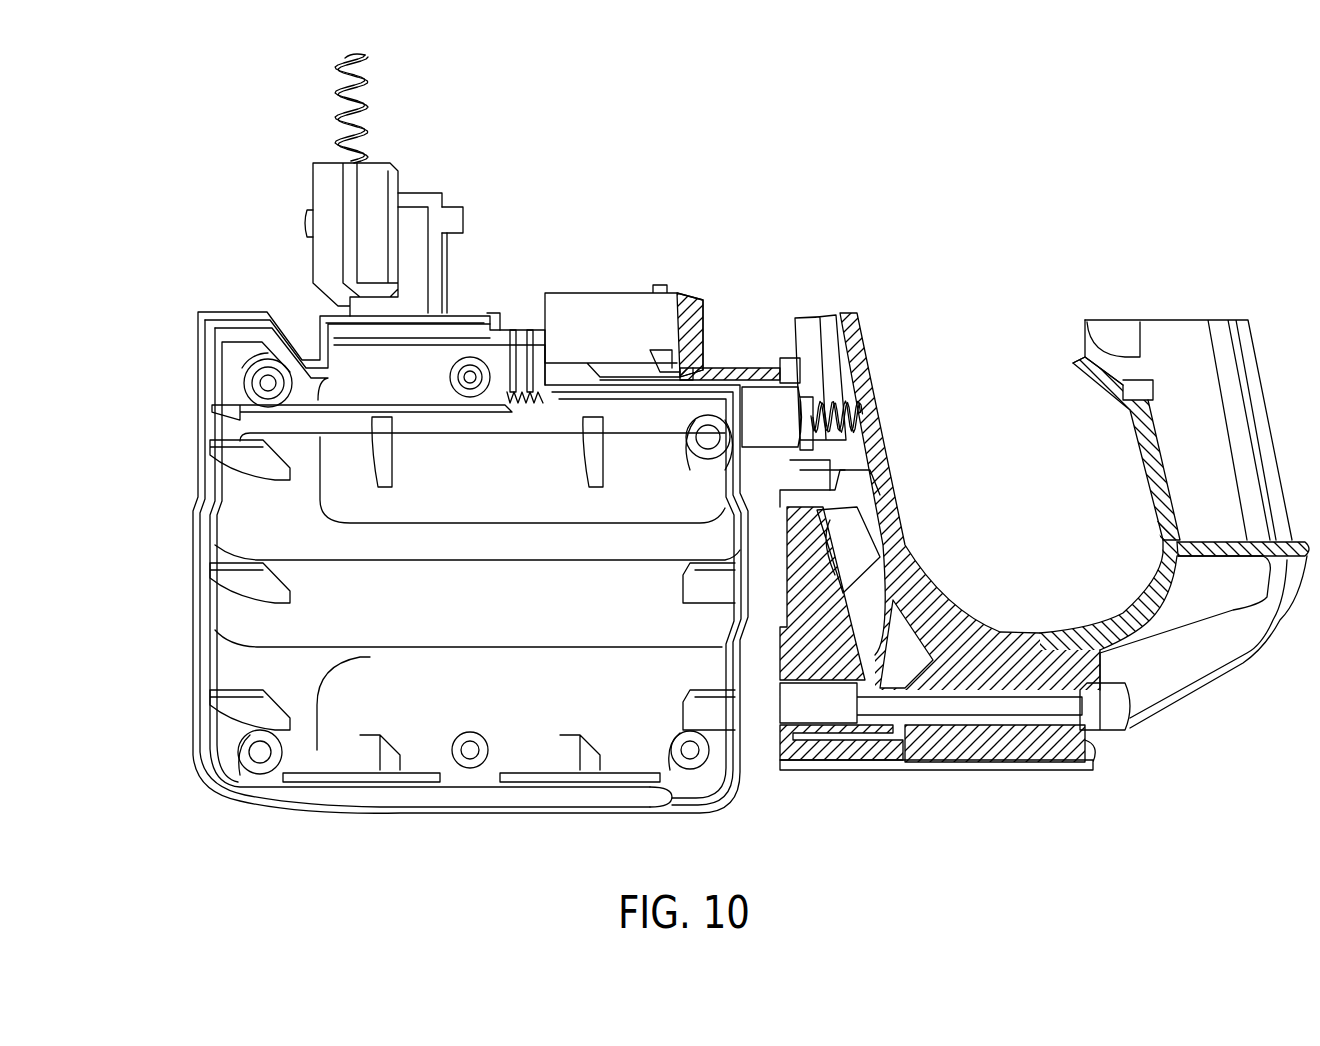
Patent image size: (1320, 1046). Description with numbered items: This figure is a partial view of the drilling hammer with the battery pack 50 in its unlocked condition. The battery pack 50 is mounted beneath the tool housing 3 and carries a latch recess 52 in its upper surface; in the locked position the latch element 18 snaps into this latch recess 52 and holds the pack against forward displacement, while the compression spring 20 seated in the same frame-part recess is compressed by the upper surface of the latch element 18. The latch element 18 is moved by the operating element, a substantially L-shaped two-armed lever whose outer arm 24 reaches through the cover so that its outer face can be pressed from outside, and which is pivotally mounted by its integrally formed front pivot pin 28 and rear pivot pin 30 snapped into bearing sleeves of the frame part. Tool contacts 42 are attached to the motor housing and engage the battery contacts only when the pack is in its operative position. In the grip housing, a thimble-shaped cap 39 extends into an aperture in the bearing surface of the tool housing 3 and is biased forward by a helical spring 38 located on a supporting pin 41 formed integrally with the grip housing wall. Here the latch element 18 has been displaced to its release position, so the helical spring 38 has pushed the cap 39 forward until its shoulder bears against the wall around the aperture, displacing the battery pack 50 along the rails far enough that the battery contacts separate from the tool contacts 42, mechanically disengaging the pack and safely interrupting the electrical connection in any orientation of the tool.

The tool housing 3 is at (1230, 640).
The latch element 18 is at (378, 165).
The compression spring 20 is at (333, 66).
The outer arm 24 is at (420, 272).
The front pivot pin 28 is at (305, 222).
The rear pivot pin 30 is at (453, 209).
The helical spring 38 is at (819, 336).
The cap 39 is at (757, 405).
The supporting pin 41 is at (845, 405).
The tool contacts 42 is at (604, 300).
The battery pack 50 is at (486, 805).
The latch recess 52 is at (470, 562).